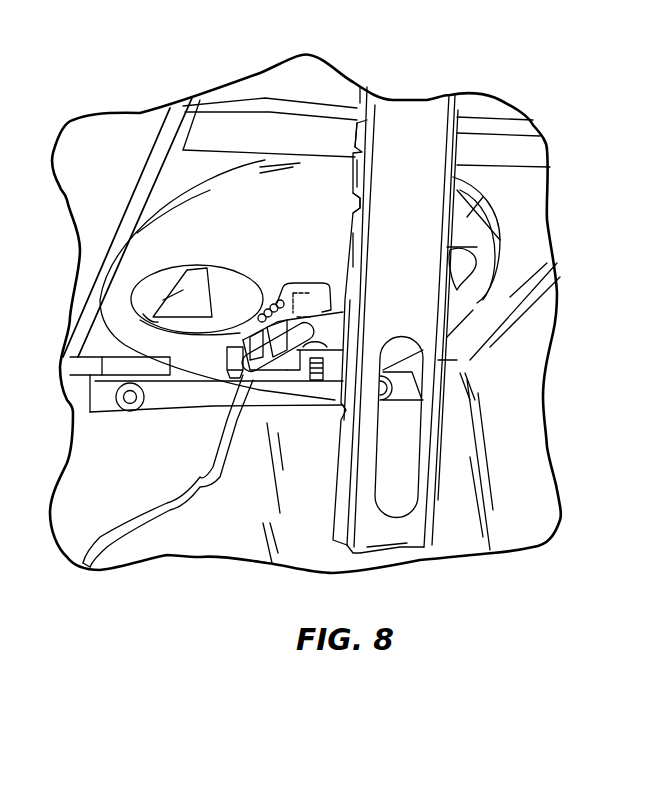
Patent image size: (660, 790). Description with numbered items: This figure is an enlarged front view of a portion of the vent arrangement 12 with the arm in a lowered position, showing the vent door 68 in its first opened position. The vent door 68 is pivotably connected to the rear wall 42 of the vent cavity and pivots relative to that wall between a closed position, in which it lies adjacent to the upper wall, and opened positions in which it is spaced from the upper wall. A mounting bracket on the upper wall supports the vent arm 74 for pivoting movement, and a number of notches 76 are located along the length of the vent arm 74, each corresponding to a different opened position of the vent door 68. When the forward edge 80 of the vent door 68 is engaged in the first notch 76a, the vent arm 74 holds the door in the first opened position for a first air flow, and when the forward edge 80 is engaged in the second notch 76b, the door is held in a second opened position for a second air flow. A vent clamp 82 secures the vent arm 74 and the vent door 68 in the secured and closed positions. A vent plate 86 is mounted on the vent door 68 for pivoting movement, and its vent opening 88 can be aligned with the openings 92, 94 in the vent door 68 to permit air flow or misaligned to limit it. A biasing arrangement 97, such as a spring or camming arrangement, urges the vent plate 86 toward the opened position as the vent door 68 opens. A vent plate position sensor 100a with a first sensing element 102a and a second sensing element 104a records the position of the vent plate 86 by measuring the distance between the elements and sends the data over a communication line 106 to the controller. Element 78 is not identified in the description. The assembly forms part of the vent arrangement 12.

The vent arrangement 12 is at (517, 442).
The rear wall 42 is at (100, 503).
The vent door 68 is at (170, 163).
The vent arm 74 is at (440, 118).
The notches 76 is at (341, 420).
The first notch 76a is at (353, 137).
The second notch 76b is at (358, 215).
The opening 78 is at (445, 292).
The forward edge 80 is at (207, 120).
The vent clamp 82 is at (95, 408).
The vent plate 86 is at (483, 200).
The vent opening 88 is at (103, 323).
The vent opening 92 is at (131, 300).
The vent opening 94 is at (447, 340).
The biasing arrangement 97 is at (270, 277).
The vent plate position sensor 100a is at (213, 403).
The first sensing element 102a is at (226, 458).
The second sensing element 104a is at (312, 293).
The communication line 106 is at (117, 537).